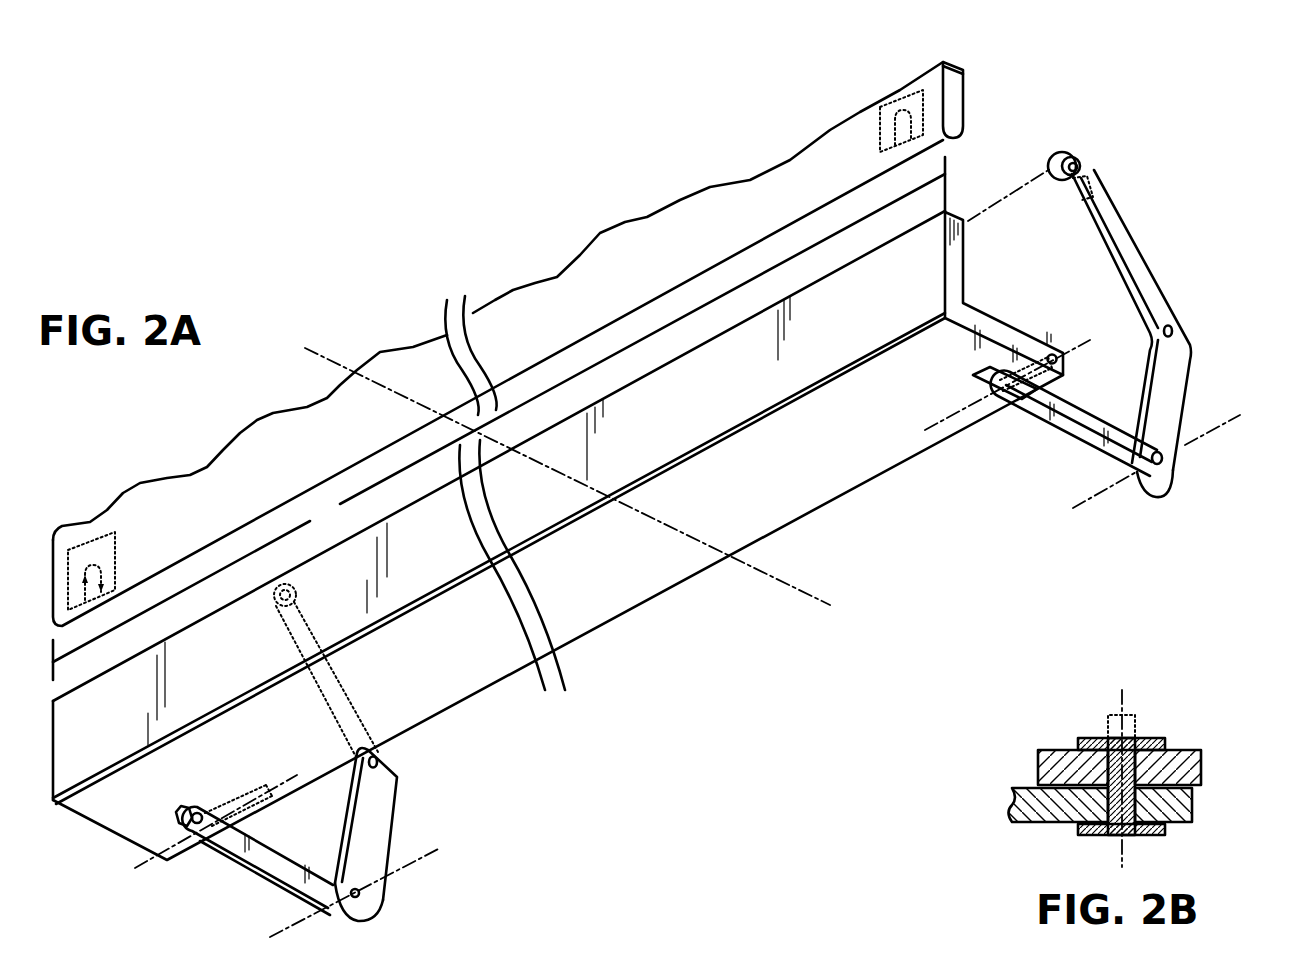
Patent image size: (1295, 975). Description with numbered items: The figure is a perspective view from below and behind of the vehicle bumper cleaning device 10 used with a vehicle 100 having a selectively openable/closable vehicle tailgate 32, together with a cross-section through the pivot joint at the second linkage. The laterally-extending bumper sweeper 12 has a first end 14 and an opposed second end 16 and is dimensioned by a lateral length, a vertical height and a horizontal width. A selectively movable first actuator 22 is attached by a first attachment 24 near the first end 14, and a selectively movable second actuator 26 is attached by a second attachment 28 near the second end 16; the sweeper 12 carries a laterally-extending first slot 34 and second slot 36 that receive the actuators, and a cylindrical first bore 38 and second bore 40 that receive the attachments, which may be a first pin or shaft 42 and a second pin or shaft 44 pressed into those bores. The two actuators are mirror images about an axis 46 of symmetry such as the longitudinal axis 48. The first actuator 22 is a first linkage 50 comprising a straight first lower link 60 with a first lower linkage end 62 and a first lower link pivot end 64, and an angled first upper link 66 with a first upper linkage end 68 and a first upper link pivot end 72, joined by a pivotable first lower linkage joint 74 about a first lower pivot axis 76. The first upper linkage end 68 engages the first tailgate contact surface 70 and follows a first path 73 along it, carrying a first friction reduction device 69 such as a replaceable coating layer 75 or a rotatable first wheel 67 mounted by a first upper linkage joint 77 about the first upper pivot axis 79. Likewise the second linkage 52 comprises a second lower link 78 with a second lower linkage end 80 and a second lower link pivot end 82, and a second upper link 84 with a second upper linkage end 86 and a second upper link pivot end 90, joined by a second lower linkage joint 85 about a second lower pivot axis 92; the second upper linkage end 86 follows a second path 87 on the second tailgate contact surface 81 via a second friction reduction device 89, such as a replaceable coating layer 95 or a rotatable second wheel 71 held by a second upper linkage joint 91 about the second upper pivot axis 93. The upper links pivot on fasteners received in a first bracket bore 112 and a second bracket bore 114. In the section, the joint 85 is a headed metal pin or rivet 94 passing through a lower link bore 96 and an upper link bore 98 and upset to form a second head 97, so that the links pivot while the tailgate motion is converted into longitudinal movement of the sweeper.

In FIG. 2A, the vehicle bumper cleaning device 10 is at (1176, 88).
In FIG. 2A, the bumper sweeper 12 is at (644, 609).
In FIG. 2A, the first end 14 is at (93, 820).
In FIG. 2A, the second end 16 is at (965, 294).
In FIG. 2A, the first actuator 22 is at (334, 838).
In FIG. 2A, the first attachment 24 is at (211, 839).
In FIG. 2A, the second actuator 26 is at (1077, 312).
In FIG. 2A, the second attachment 28 is at (1007, 416).
In FIG. 2A, the vehicle tailgate 32 is at (893, 85).
In FIG. 2A, the first slot 34 is at (211, 839).
In FIG. 2A, the second slot 36 is at (980, 378).
In FIG. 2A, the first bore 38 is at (232, 799).
In FIG. 2A, the second bore 40 is at (962, 402).
In FIG. 2A, the first pin or shaft 42 is at (183, 812).
In FIG. 2A, the second pin or shaft 44 is at (986, 410).
In FIG. 2A, the axis of symmetry 46 is at (612, 476).
In FIG. 2A, the longitudinal axis 48 is at (806, 589).
In FIG. 2A, the first linkage 50 is at (334, 838).
In FIG. 2A, the second linkage 52 is at (1077, 312).
In FIG. 2A, the first lower link 60 is at (275, 843).
In FIG. 2A, the first lower linkage end 62 is at (203, 830).
In FIG. 2A, the first lower link pivot end 64 is at (297, 851).
In FIG. 2A, the first upper link 66 is at (399, 800).
In FIG. 2A, the rotatable first wheel 67 is at (274, 584).
In FIG. 2A, the first upper linkage end 68 is at (268, 612).
In FIG. 2A, the first friction reduction device 69 is at (300, 594).
In FIG. 2A, the first tailgate contact surface 70 is at (128, 550).
In FIG. 2A, the rotatable second wheel 71 is at (1052, 170).
In FIG. 2A, the first upper link pivot end 72 is at (362, 914).
In FIG. 2A, the first path 73 is at (122, 575).
In FIG. 2A, the first lower linkage joint 74 is at (365, 900).
In FIG. 2A, the replaceable coating layer 75 is at (312, 622).
In FIG. 2A, the first lower pivot axis 76 is at (415, 872).
In FIG. 2A, the first upper linkage joint 77 is at (300, 612).
In FIG. 2A, the second lower link 78 is at (1067, 396).
In FIG. 2B, the second lower link 78 is at (1036, 776).
In FIG. 2A, the first upper pivot axis 79 is at (392, 556).
In FIG. 2A, the second lower linkage end 80 is at (1028, 356).
In FIG. 2A, the second tailgate contact surface 81 is at (880, 124).
In FIG. 2A, the second lower link pivot end 82 is at (1150, 480).
In FIG. 2B, the second lower link pivot end 82 is at (1202, 768).
In FIG. 2A, the second upper link 84 is at (1124, 236).
In FIG. 2B, the second upper link 84 is at (1020, 827).
In FIG. 2A, the second lower linkage joint 85 is at (1170, 459).
In FIG. 2B, the second lower linkage joint 85 is at (1165, 743).
In FIG. 2A, the second upper linkage end 86 is at (1083, 168).
In FIG. 2A, the second path 87 is at (935, 95).
In FIG. 2A, the second friction reduction device 89 is at (1074, 150).
In FIG. 2A, the second upper link pivot end 90 is at (1178, 480).
In FIG. 2B, the second upper link pivot end 90 is at (1192, 810).
In FIG. 2A, the second upper linkage joint 91 is at (1080, 160).
In FIG. 2A, the second lower pivot axis 92 is at (1238, 417).
In FIG. 2B, the second lower pivot axis 92 is at (1130, 702).
In FIG. 2A, the second upper pivot axis 93 is at (998, 202).
In FIG. 2B, the headed metal pin or rivet 94 is at (1140, 722).
In FIG. 2A, the replaceable coating layer 95 is at (1081, 188).
In FIG. 2B, the lower link bore 96 is at (1112, 775).
In FIG. 2B, the second head 97 is at (1094, 738).
In FIG. 2B, the upper link bore 98 is at (1128, 806).
In FIG. 2A, the vehicle 100 is at (623, 219).
In FIG. 2A, the first bracket bore 112 is at (380, 761).
In FIG. 2A, the second bracket bore 114 is at (1172, 331).